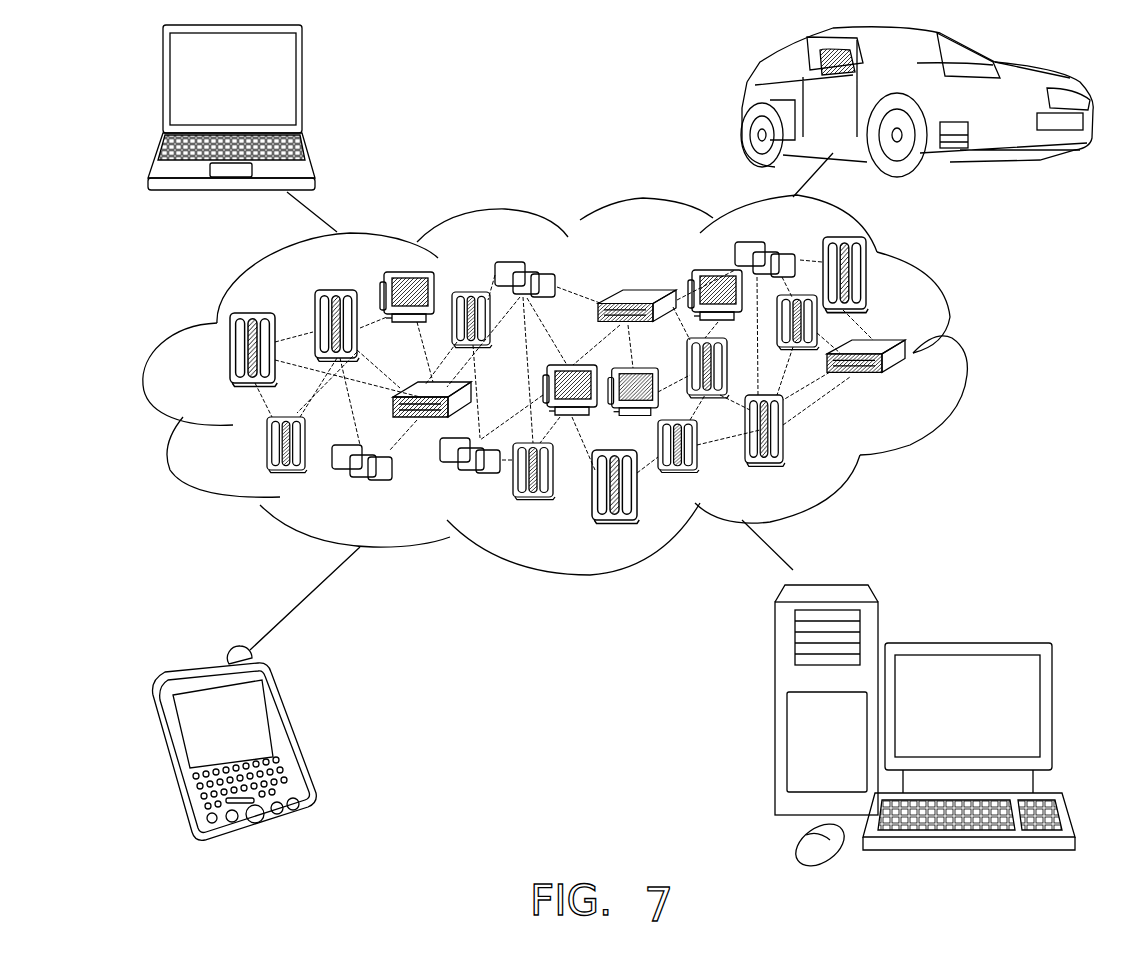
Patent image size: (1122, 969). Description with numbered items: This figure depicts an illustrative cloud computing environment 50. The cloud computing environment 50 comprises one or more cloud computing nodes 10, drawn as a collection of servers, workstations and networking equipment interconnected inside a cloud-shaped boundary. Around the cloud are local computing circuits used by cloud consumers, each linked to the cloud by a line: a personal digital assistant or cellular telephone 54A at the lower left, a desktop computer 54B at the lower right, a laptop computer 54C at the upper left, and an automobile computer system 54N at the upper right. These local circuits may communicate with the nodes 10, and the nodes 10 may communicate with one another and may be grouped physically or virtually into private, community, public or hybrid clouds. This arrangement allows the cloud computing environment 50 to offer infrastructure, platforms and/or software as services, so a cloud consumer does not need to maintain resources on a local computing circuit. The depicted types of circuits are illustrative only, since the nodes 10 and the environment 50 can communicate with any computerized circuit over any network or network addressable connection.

The cloud computing node 10 is at (907, 388).
The cloud computing environment 50 is at (967, 360).
The personal digital assistant or cellular telephone 54A is at (292, 737).
The desktop computer 54B is at (965, 642).
The laptop computer 54C is at (302, 88).
The automobile computer system 54N is at (742, 101).